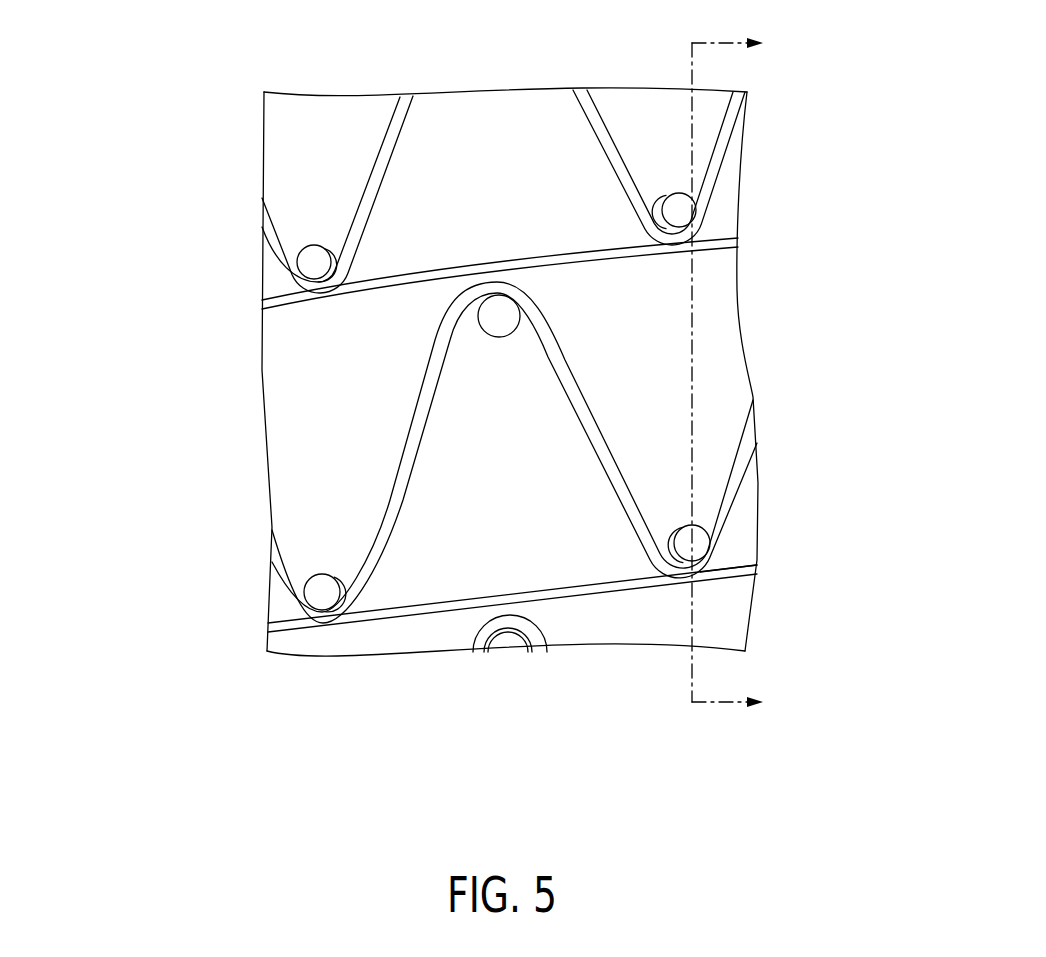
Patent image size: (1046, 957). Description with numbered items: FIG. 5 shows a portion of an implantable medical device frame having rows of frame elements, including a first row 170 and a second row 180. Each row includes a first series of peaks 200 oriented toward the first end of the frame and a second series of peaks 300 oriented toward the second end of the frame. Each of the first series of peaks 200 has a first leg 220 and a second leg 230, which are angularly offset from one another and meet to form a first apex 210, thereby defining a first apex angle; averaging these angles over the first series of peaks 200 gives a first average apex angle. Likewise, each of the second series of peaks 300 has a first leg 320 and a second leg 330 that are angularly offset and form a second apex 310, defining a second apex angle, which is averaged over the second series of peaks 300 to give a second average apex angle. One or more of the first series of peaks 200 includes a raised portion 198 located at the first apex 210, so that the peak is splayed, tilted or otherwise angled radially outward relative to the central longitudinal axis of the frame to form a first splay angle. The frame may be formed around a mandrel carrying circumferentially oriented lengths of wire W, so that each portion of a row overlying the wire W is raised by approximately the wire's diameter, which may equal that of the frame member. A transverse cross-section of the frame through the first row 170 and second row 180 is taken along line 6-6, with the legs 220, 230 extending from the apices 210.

The first row 170 is at (228, 203).
The second row 180 is at (222, 582).
The raised portion 198 is at (297, 266).
The first series of peaks 200 is at (340, 623).
The first apex 210 is at (512, 674).
The first leg 220 is at (391, 533).
The second leg 230 is at (268, 627).
The second series of peaks 300 is at (512, 293).
The second apex 310 is at (644, 128).
The first leg 320 is at (593, 378).
The second leg 330 is at (432, 379).
The wire W is at (758, 562).
The section line 6- 6 is at (740, 375).